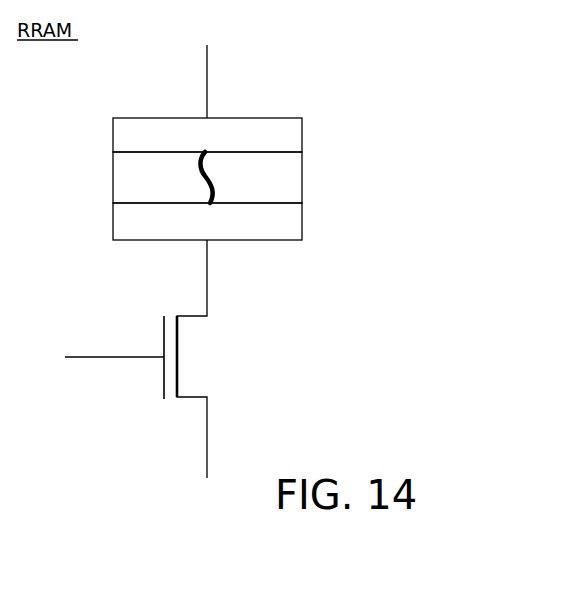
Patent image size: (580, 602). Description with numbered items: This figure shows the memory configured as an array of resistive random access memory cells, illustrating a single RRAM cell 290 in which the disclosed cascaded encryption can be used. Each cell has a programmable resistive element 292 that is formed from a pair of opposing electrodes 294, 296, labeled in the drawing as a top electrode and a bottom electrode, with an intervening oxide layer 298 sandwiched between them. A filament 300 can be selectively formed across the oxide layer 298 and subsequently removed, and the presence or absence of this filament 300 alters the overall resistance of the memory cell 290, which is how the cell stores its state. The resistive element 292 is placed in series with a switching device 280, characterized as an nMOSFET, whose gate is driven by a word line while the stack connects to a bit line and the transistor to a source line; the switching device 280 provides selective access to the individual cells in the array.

The resistive random access memory cell 290 is at (330, 62).
The programmable resistive element 292 is at (88, 157).
The electrode 294 is at (302, 139).
The oxide layer 298 is at (302, 181).
The electrode 296 is at (302, 229).
The filament 300 is at (206, 188).
The switching device 280 is at (178, 354).